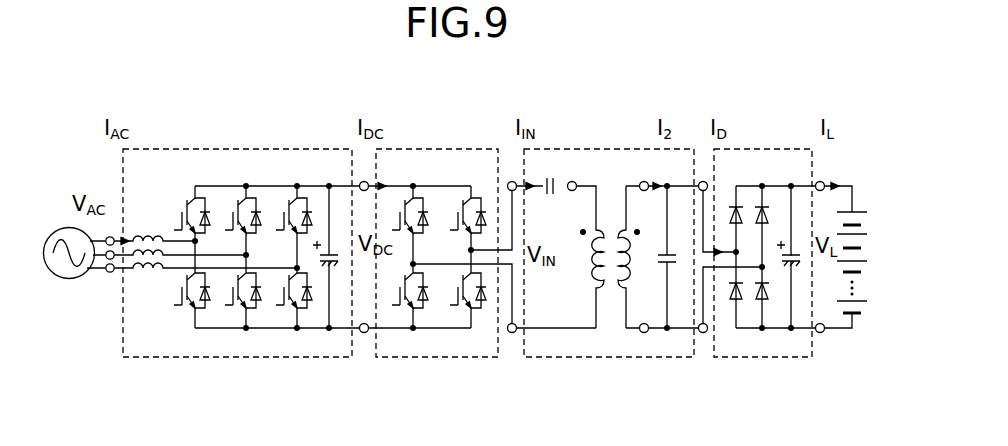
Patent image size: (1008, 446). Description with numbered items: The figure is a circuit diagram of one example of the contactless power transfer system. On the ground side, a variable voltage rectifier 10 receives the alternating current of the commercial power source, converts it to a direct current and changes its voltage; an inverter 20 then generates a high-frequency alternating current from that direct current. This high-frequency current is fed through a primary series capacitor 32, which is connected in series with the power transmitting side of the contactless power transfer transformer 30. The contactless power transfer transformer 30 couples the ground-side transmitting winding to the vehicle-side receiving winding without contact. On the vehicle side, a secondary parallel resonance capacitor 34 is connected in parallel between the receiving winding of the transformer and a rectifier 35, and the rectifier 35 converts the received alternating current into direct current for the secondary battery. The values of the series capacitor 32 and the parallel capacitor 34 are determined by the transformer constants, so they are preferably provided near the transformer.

The variable voltage rectifier 10 is at (199, 149).
The inverter 20 is at (434, 149).
The contactless power transfer transformer 30 is at (604, 149).
The primary series capacitor 32 is at (549, 175).
The secondary parallel resonance capacitor 34 is at (673, 263).
The rectifier 35 is at (767, 149).